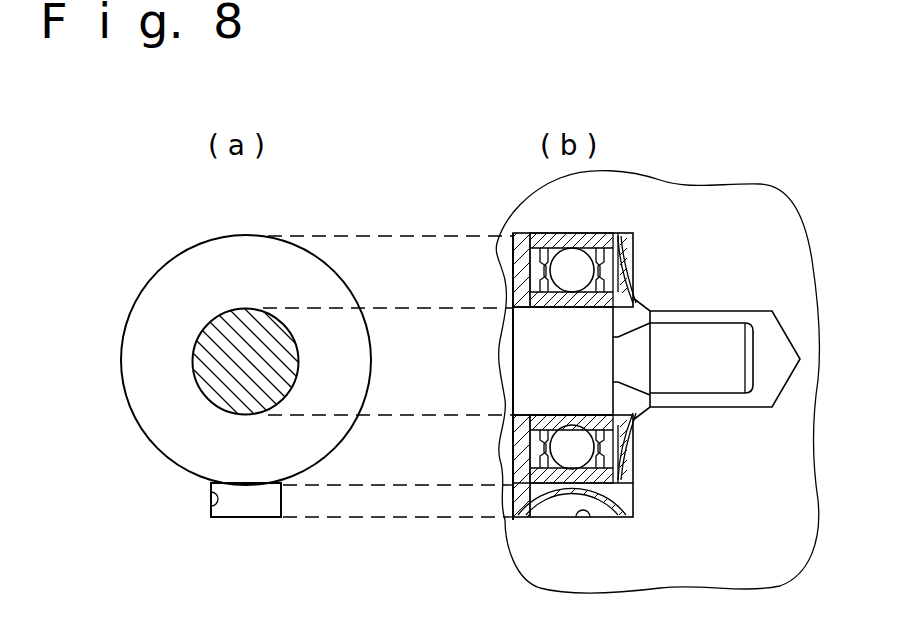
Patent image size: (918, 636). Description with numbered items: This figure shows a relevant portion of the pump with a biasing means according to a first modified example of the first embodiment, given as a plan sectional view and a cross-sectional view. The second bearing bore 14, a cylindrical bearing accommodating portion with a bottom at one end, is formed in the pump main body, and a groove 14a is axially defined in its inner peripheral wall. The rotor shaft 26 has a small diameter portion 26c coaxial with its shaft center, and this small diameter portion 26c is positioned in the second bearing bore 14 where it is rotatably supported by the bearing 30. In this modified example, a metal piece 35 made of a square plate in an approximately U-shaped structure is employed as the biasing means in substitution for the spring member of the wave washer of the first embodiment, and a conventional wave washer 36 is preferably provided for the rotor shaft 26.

The second bearing bore 14 is at (133, 305).
The groove 14a is at (211, 512).
The rotor shaft 26 is at (724, 398).
The small diameter portion 26c is at (202, 365).
The bearing 30 is at (633, 488).
The metal piece 35 is at (248, 517).
The wave washer 36 is at (636, 455).